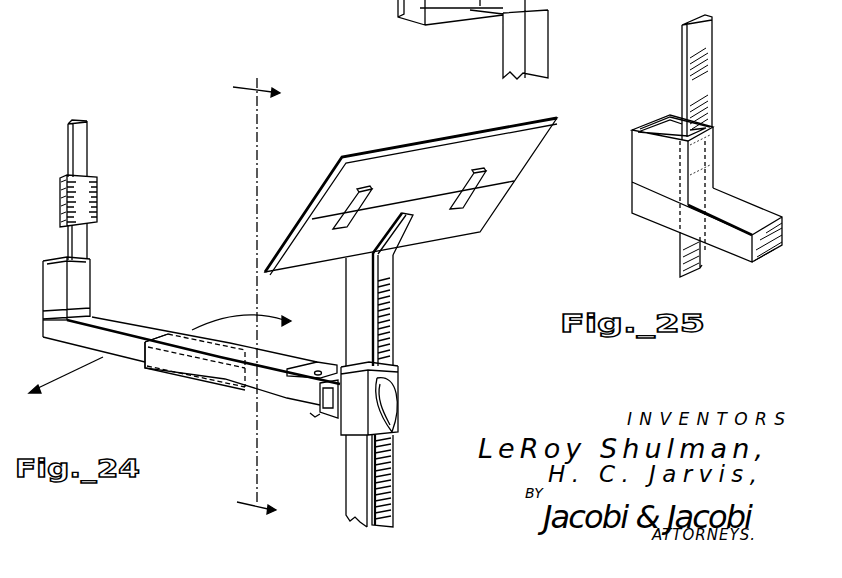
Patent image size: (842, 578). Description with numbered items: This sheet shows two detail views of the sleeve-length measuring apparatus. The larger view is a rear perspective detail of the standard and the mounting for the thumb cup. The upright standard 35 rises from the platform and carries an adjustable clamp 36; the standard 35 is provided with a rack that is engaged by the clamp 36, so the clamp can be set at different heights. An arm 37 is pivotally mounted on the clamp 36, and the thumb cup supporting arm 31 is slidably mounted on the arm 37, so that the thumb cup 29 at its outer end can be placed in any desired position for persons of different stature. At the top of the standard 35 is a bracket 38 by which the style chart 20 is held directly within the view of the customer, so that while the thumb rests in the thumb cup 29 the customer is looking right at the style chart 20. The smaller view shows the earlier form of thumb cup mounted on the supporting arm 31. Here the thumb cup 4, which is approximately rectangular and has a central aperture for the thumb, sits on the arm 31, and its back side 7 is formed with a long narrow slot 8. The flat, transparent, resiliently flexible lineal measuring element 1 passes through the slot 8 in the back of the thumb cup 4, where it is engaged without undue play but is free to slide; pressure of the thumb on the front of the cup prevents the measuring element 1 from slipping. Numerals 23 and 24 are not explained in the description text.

In FIG. 25, the lineal measuring element 1 is at (705, 52).
In FIG. 25, the thumb cup 4 is at (637, 163).
In FIG. 25, the back side of thumb cup 7 is at (705, 160).
In FIG. 25, the slot 8 is at (703, 138).
In FIG. 24, the style chart 20 is at (557, 126).
In FIG. 24, the rod / section line 23 is at (86, 143).
In FIG. 24, the scale block 24 is at (97, 187).
In FIG. 24, the thumb cup 29 is at (84, 277).
In FIG. 24, the thumb cup supporting arm 31 is at (113, 318).
In FIG. 25, the thumb cup supporting arm 31 is at (727, 200).
In FIG. 24, the standard 35 is at (355, 268).
In FIG. 24, the adjustable clamp 36 is at (395, 378).
In FIG. 24, the arm 37 is at (250, 393).
In FIG. 24, the bracket 38 is at (385, 262).